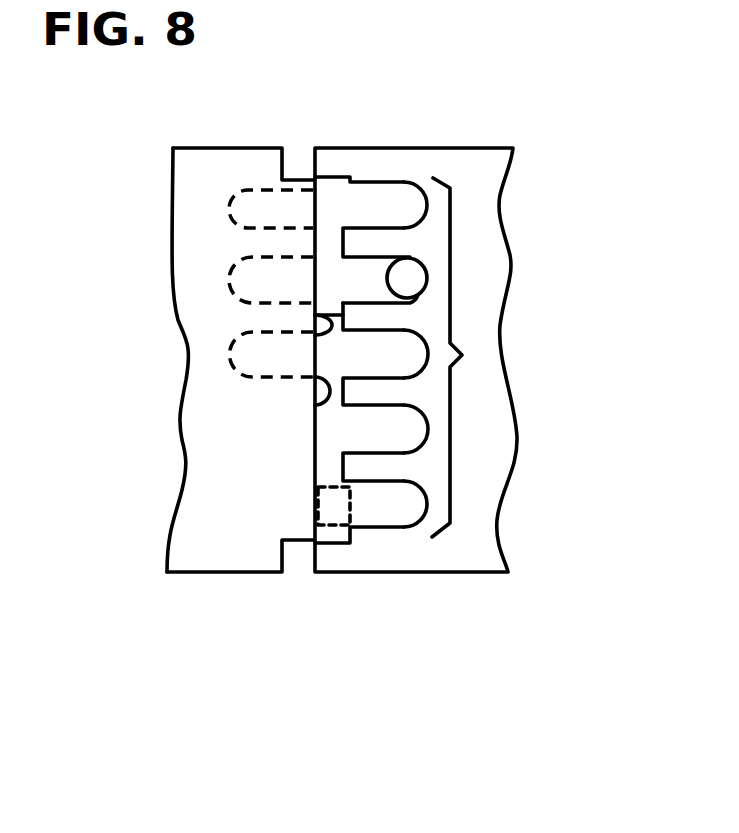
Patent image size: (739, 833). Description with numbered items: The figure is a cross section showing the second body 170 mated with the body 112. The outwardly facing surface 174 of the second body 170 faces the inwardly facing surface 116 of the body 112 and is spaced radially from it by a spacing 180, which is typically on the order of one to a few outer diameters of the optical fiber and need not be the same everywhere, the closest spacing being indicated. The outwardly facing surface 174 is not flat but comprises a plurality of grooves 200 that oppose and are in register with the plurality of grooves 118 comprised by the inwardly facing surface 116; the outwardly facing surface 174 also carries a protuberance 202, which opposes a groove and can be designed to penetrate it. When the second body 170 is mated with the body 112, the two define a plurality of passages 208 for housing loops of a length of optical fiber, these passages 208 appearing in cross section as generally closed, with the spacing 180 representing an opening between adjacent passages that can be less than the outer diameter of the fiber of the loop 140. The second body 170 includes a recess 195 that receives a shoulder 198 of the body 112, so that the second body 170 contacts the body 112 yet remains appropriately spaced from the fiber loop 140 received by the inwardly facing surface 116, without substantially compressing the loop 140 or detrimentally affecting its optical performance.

The body 112 is at (473, 172).
The inwardly facing surface 116 is at (385, 242).
The grooves 118 is at (462, 355).
The fiber loop 140 is at (410, 277).
The second body 170 is at (218, 314).
The outwardly facing surface 174 is at (313, 407).
The spacing 180 is at (325, 322).
The recess 195 is at (263, 162).
The shoulder 198 is at (342, 162).
The grooves 200 is at (232, 266).
The protuberance 202 is at (335, 523).
The passages 208 is at (393, 353).